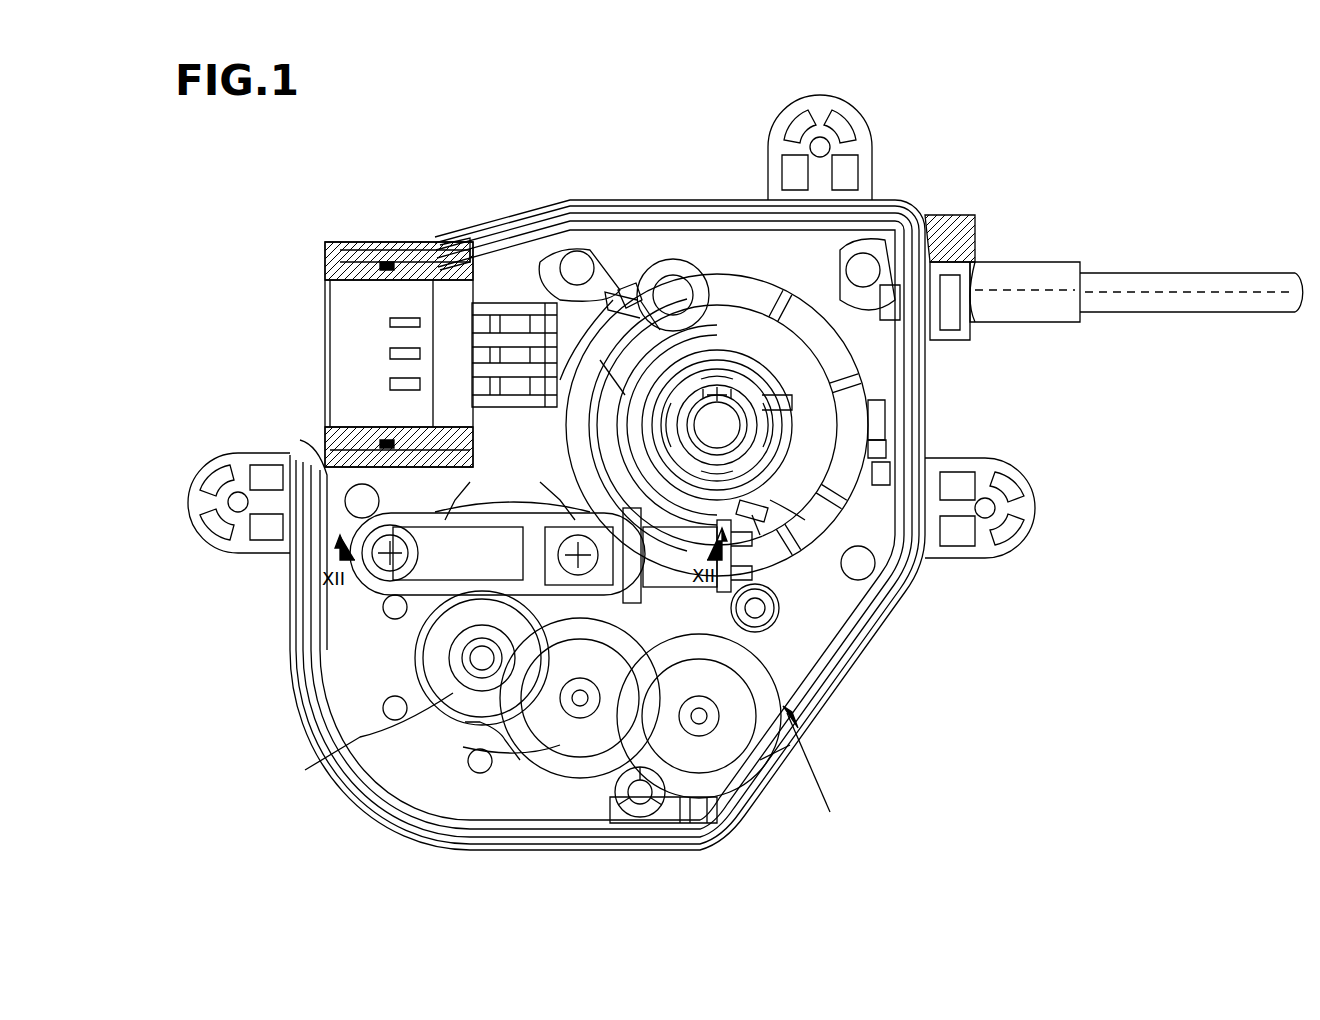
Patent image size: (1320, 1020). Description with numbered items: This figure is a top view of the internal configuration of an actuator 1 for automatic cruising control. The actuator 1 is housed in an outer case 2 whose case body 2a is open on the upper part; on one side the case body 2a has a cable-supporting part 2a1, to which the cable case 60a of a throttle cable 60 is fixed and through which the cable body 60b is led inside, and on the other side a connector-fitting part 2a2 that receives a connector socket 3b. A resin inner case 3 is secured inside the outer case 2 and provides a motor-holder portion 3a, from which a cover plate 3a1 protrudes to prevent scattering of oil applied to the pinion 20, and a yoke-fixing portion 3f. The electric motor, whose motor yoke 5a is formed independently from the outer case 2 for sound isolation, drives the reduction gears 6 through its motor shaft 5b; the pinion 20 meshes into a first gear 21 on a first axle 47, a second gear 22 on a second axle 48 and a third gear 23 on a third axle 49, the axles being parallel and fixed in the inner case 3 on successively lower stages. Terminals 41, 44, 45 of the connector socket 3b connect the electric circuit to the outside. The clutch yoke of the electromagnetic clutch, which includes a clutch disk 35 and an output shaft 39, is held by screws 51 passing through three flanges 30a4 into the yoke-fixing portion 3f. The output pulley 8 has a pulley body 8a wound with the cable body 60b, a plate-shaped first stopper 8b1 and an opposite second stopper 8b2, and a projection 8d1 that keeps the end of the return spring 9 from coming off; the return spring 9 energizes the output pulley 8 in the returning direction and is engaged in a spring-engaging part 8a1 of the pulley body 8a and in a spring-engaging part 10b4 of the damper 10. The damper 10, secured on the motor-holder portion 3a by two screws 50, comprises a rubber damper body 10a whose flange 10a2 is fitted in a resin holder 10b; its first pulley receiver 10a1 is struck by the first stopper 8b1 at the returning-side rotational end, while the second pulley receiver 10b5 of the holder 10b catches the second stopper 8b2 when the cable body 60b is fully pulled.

The actuator 1 is at (1080, 138).
The outer case 2 is at (900, 205).
The case body 2a is at (900, 625).
The cable-supporting part 2a1 is at (935, 230).
The connector-fitting part 2a2 is at (420, 250).
The inner case 3 is at (620, 318).
The motor-holder portion 3a is at (463, 747).
The cover plate 3a1 is at (505, 770).
The connector socket 3b is at (495, 300).
The yoke-fixing portion 3f is at (885, 472).
The motor yoke 5a is at (385, 733).
The motor shaft 5b is at (470, 658).
The reduction gears 6 is at (812, 775).
The output pulley 8 is at (712, 272).
The pulley body 8a is at (885, 300).
The spring-engaging part 8a1 is at (790, 510).
The first stopper 8b1 is at (760, 560).
The second stopper 8b2 is at (625, 305).
The projection 8d1 is at (775, 392).
The return spring 9 is at (725, 428).
The damper 10 is at (632, 600).
The damper body 10a is at (775, 760).
The first pulley receiver 10a1 is at (780, 625).
The flange 10a2 is at (598, 740).
The holder 10b is at (443, 517).
The spring-engaging part 10b4 is at (390, 270).
The second pulley receiver 10b5 is at (345, 450).
The pinion 20 is at (455, 693).
The first gear 21 is at (527, 773).
The second gear 22 is at (692, 823).
The third gear 23 is at (765, 615).
The flanges 30a4 is at (648, 298).
The clutch disk 35 is at (615, 378).
The output shaft 39 is at (878, 420).
The first terminal 41 is at (390, 322).
The fourth terminal 44 is at (390, 383).
The fifth terminal 45 is at (390, 353).
The first axle 47 is at (580, 705).
The second axle 48 is at (700, 722).
The third axle 49 is at (785, 640).
The screws 50 is at (380, 592).
The screws 51 is at (655, 312).
The throttle cable 60 is at (1190, 275).
The cable case 60a is at (1060, 262).
The cable body 60b is at (825, 250).